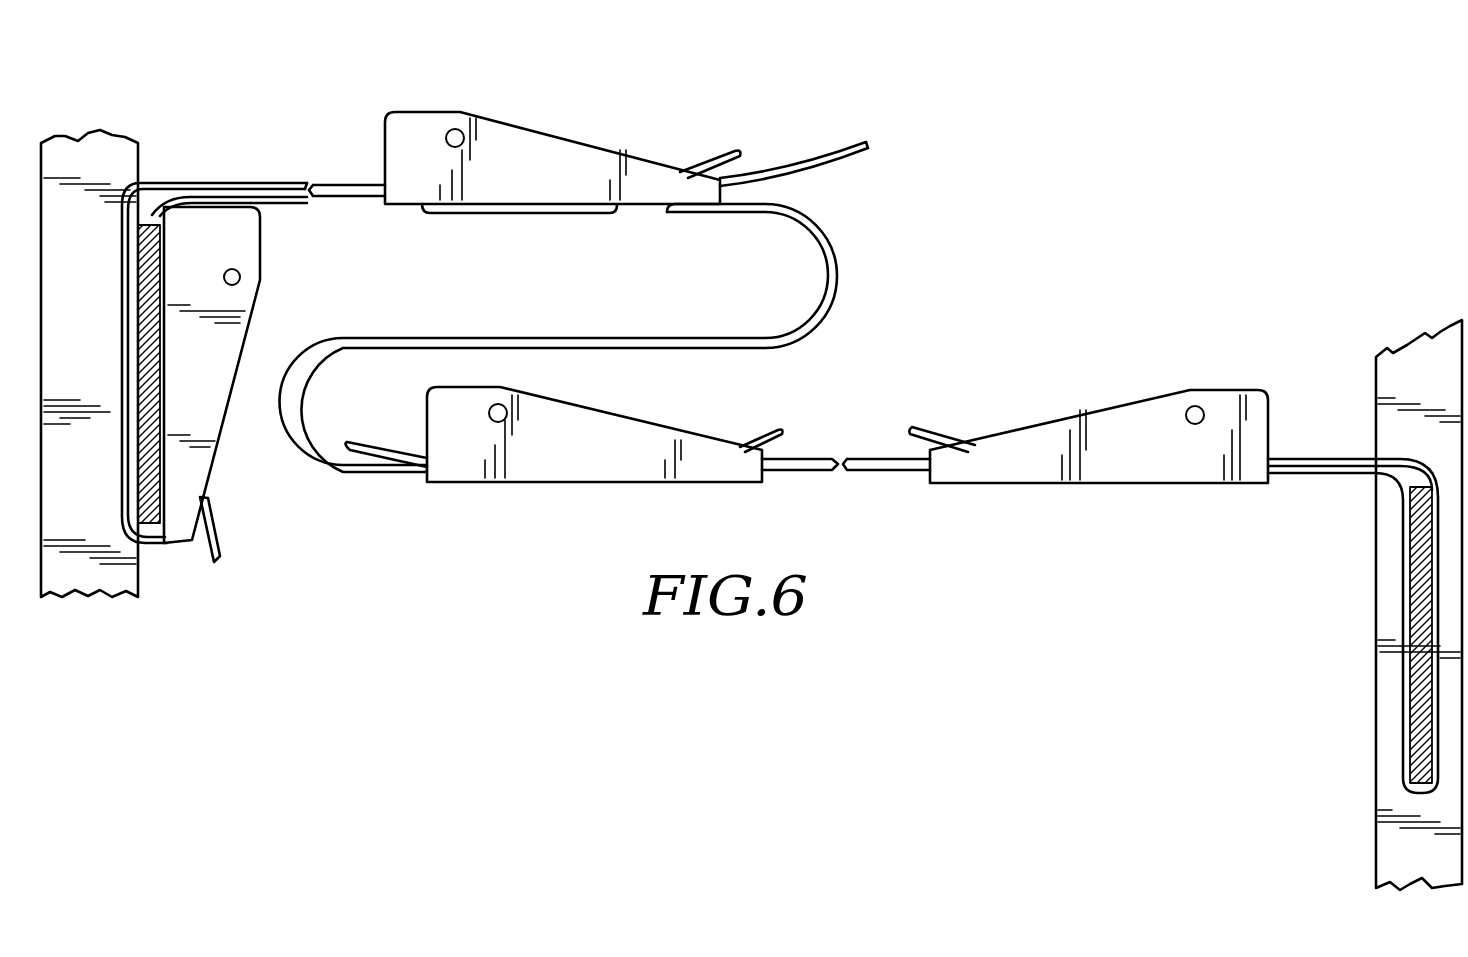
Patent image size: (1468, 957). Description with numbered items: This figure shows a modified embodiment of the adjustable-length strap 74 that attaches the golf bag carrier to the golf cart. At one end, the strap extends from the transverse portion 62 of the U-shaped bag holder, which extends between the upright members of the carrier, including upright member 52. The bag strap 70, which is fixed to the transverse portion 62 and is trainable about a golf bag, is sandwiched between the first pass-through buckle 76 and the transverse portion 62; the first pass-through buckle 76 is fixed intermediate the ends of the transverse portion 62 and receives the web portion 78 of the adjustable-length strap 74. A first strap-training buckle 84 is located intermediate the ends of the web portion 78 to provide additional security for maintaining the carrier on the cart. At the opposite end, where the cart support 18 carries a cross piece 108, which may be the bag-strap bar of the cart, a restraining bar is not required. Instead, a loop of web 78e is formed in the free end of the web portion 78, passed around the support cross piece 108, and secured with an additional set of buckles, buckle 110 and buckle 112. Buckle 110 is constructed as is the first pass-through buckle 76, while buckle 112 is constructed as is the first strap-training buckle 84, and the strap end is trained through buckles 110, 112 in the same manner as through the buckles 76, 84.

The upright member 52 is at (140, 170).
The transverse portion 62 is at (148, 403).
The bag strap 70 is at (160, 395).
The first pass-through buckle 76 is at (261, 278).
The first strap-training buckle 84 is at (436, 109).
The adjustable-length strap 74 is at (862, 251).
The web portion 78 is at (819, 328).
The buckle 112 is at (601, 401).
The buckle 110 is at (1080, 413).
The loop of web 78e is at (1403, 607).
The cross piece 108 is at (1416, 711).
The support 18 is at (1375, 860).